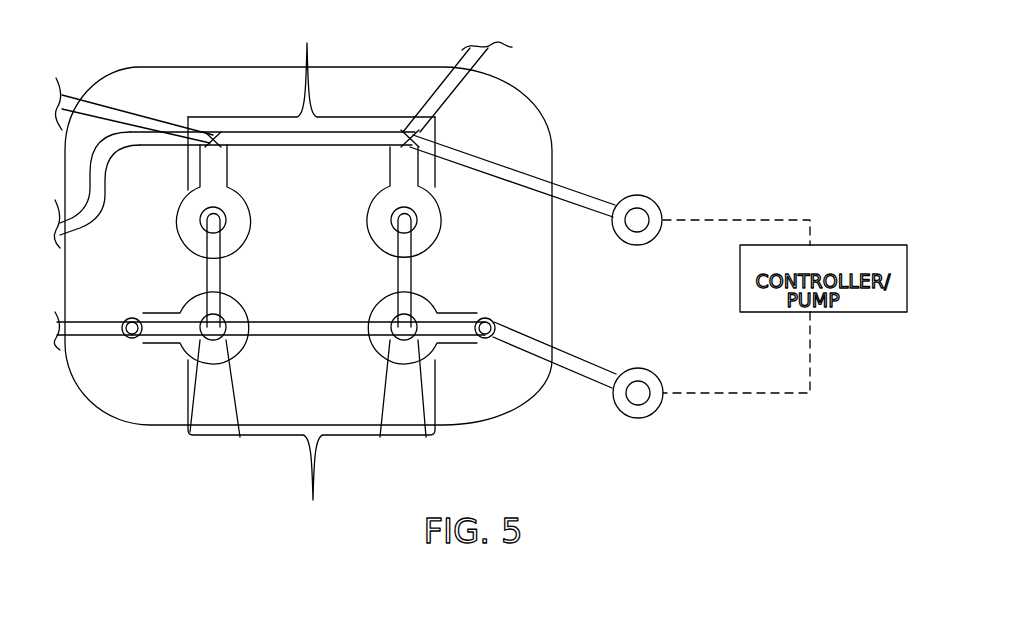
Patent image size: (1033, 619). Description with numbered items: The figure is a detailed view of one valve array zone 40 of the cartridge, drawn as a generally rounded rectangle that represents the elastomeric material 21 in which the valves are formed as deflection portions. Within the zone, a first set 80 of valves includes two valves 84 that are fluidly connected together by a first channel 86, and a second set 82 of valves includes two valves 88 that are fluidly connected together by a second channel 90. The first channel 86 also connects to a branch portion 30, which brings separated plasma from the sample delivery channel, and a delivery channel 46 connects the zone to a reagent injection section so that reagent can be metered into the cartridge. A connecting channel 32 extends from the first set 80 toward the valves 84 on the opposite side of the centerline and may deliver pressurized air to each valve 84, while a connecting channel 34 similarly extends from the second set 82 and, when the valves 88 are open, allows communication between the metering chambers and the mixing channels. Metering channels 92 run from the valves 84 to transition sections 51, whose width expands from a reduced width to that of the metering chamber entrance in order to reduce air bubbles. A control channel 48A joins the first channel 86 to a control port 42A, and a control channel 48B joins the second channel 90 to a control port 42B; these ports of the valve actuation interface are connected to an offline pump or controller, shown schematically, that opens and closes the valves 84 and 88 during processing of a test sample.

The elastomeric material 21 is at (505, 92).
The branch portion 30 is at (99, 108).
The connecting channel 32 is at (78, 213).
The connecting channel 34 is at (98, 350).
The valve array zone 40 is at (568, 92).
The control port 42A is at (660, 240).
The control port 42B is at (663, 368).
The delivery channel 46 is at (461, 63).
The control channel 48A is at (565, 192).
The control channel 48B is at (563, 353).
The transition section 51 is at (205, 402).
The first set of valves 80 is at (311, 95).
The second set of valves 82 is at (311, 449).
The valve 84 is at (234, 192).
The first channel 86 is at (327, 137).
The valve 88 is at (234, 300).
The second channel 90 is at (295, 336).
The metering channel 92 is at (212, 277).